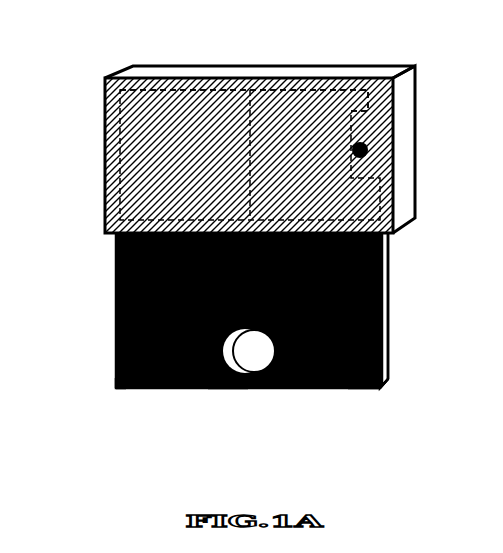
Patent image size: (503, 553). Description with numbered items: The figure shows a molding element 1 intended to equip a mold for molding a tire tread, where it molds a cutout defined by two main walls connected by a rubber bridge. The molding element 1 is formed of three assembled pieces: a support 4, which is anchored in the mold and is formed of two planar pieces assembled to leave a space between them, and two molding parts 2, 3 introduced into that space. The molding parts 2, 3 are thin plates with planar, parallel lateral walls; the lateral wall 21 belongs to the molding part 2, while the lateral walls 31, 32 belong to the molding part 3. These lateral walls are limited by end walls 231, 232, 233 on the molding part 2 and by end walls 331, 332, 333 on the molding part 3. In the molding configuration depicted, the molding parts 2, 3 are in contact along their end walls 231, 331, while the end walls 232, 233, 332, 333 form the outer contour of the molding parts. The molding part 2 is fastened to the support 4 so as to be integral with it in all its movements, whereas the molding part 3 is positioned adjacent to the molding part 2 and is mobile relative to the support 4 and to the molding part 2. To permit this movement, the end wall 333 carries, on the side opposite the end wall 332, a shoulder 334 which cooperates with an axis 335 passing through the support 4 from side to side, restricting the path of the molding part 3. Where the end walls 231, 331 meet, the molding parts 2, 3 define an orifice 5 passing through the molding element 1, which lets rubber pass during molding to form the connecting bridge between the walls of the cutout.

The molding element 1 is at (250, 126).
The molding part 2 is at (257, 346).
The molding part 3 is at (372, 262).
The support 4 is at (375, 195).
The orifice 5 is at (243, 347).
The lateral wall 21 is at (112, 382).
The lateral wall 31 is at (345, 380).
The lateral wall 32 is at (380, 293).
The end wall 231 is at (218, 380).
The end wall 232 is at (172, 382).
The end wall 233 is at (110, 352).
The end wall 331 is at (333, 380).
The end wall 332 is at (340, 380).
The end wall 333 is at (380, 345).
The shoulder 334 is at (365, 68).
The axis 335 is at (360, 142).